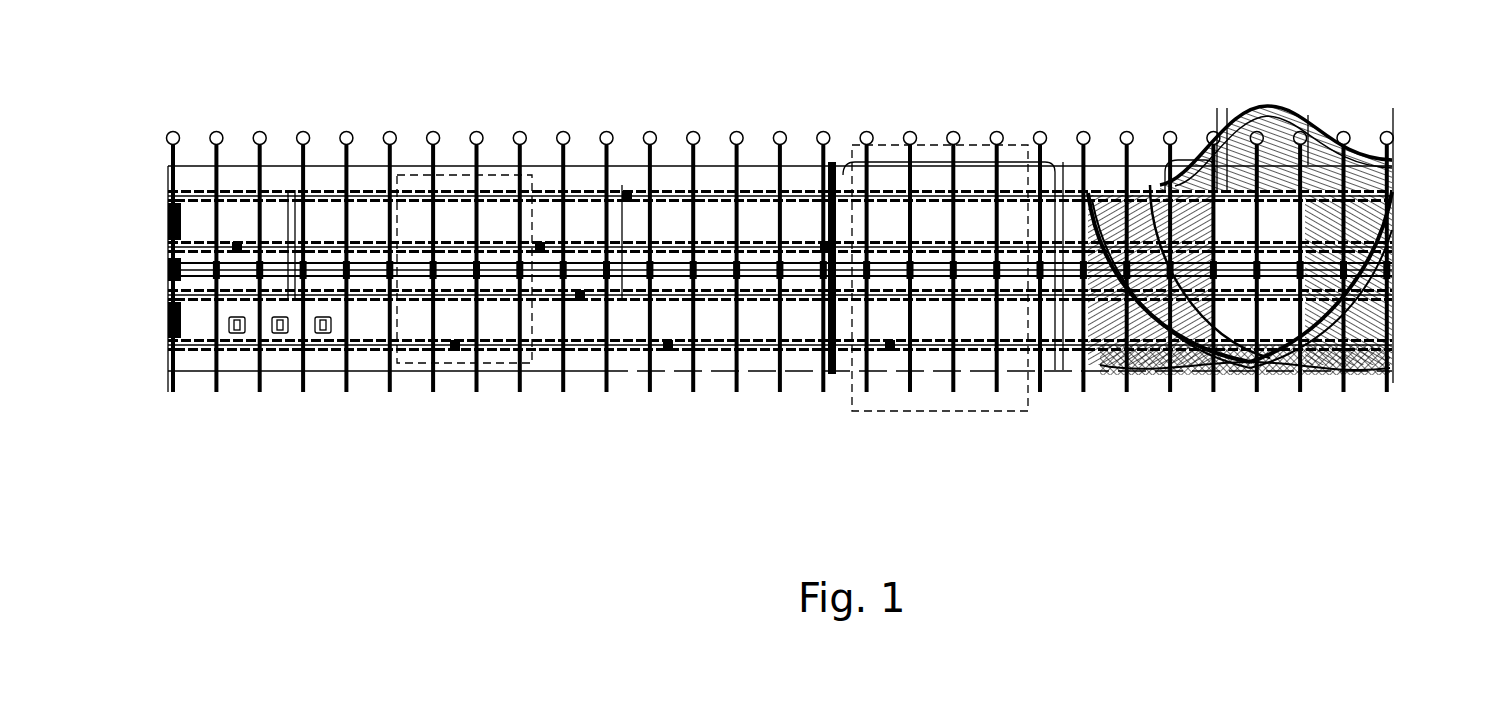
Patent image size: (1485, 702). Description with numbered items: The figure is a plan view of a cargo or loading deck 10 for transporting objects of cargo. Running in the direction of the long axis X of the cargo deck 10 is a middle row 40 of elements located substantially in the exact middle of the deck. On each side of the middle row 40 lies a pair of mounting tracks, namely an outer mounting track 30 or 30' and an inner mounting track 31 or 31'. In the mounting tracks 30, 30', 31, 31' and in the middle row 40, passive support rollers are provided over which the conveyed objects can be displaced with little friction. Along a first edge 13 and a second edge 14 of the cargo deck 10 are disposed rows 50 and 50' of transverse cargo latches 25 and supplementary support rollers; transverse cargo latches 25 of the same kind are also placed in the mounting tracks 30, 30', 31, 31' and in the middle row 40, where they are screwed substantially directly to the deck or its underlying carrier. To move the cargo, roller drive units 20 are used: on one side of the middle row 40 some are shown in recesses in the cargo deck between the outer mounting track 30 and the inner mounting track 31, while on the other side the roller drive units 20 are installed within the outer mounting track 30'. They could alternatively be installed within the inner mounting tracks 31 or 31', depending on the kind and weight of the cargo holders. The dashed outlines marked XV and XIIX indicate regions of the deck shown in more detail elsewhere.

The cargo deck 10 is at (805, 358).
The first edge 13 is at (1393, 367).
The second edge 14 is at (1393, 158).
The roller drive units 20 is at (237, 333).
The transverse cargo latches 25 is at (222, 266).
The outer mounting track 30 is at (780, 411).
The outer mounting track 30' is at (780, 136).
The inner mounting track 31 is at (780, 400).
The inner mounting track 31' is at (780, 155).
The middle row 40 is at (367, 278).
The row of transverse cargo latches and supplementary support rollers 50 is at (988, 319).
The row of transverse cargo latches and supplementary support rollers 50' is at (1175, 124).
The long axis X is at (1398, 267).
The section XV region XV is at (943, 412).
The section XIIX region XIIX is at (413, 363).